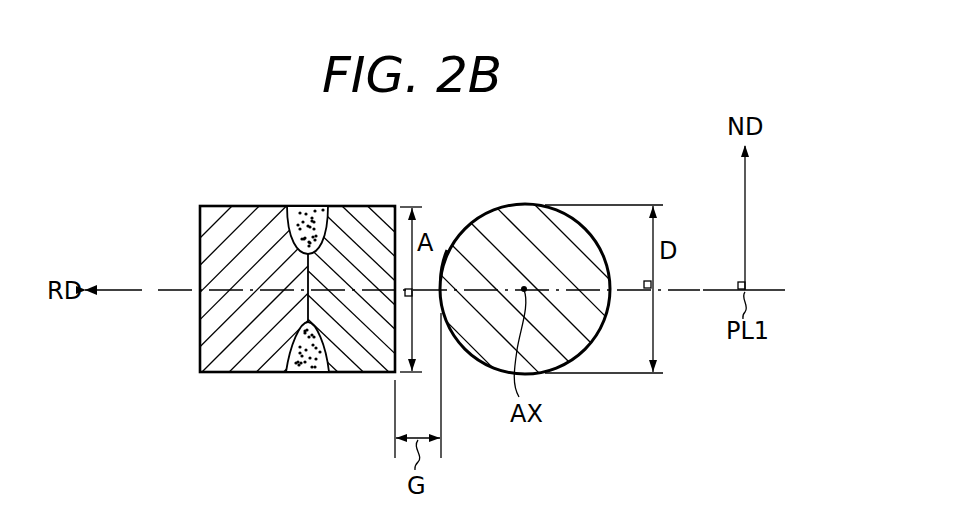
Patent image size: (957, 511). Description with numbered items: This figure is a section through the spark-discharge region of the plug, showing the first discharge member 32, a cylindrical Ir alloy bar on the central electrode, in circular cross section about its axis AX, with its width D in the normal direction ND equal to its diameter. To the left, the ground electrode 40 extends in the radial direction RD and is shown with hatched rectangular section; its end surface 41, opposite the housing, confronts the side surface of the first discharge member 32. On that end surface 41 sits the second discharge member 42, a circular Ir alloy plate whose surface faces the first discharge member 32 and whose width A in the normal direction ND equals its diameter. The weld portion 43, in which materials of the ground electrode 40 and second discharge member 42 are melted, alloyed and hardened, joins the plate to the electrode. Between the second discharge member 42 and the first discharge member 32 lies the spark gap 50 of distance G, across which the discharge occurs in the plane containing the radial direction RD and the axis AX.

The first discharge member 32 is at (528, 205).
The ground electrode 40 is at (212, 207).
The end surface of the ground electrode 41 is at (305, 282).
The second discharge member 42 is at (356, 206).
The weld portion 43 is at (310, 206).
The spark gap 50 is at (440, 237).